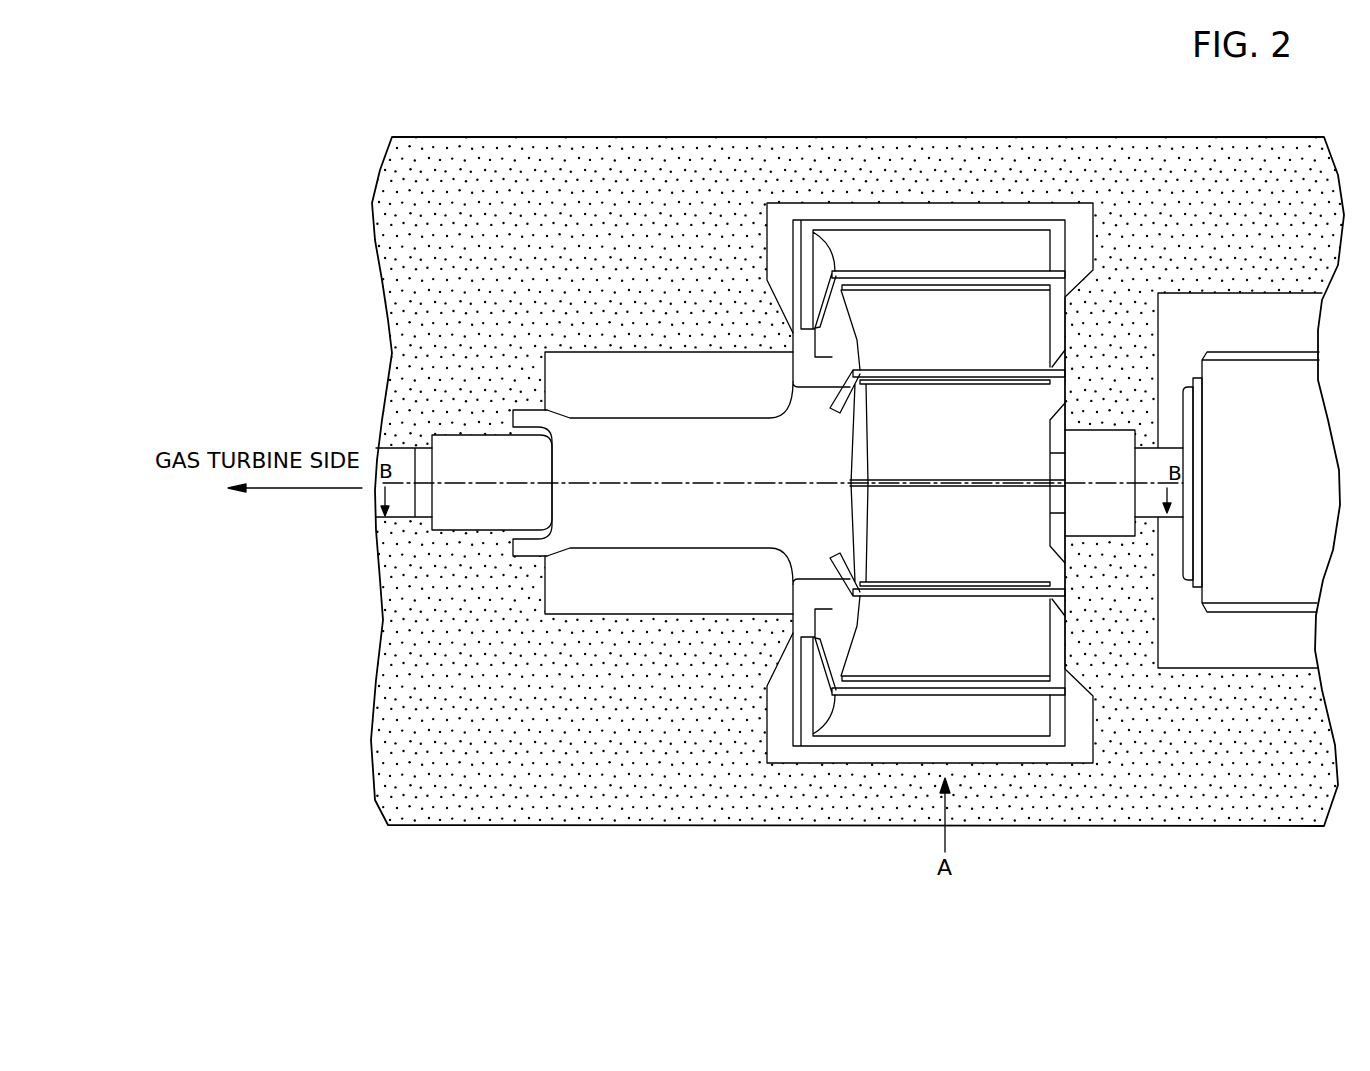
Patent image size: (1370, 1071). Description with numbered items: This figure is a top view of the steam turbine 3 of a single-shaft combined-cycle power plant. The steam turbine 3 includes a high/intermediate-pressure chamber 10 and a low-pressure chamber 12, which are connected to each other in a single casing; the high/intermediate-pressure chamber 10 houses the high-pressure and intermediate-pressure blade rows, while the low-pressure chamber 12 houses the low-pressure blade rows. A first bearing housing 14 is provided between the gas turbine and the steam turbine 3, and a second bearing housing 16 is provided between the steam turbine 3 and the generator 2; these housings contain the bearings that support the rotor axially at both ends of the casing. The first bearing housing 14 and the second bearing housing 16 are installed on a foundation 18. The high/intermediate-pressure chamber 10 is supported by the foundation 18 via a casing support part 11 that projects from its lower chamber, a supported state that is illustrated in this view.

The generator 2 is at (1284, 367).
The steam turbine 3 is at (1046, 182).
The high/intermediate-pressure chamber 10 is at (619, 438).
The casing support part 11 is at (522, 412).
The low-pressure chamber 12 is at (843, 233).
The first bearing housing 14 is at (487, 447).
The second bearing housing 16 is at (1098, 440).
The foundation 18 is at (609, 213).